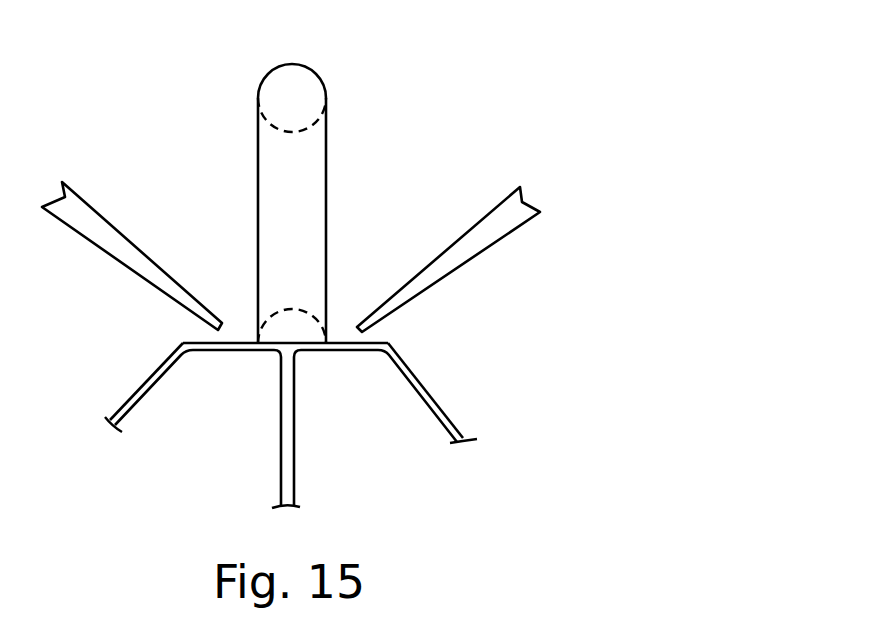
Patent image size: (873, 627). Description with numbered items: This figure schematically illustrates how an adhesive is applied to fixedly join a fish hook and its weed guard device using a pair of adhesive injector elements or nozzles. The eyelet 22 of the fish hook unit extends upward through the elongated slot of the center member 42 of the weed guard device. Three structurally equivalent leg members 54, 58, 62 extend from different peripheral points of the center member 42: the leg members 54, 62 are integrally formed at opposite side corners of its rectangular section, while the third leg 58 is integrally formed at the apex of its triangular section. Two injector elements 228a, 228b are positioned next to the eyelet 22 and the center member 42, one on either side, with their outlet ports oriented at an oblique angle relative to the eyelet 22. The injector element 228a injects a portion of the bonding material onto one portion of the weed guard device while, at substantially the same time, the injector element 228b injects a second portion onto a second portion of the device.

The eyelet 22 is at (315, 73).
The injector element 228a is at (120, 236).
The injector element 228b is at (452, 249).
The center member 42 is at (385, 341).
The leg member 54 is at (153, 376).
The leg member 58 is at (278, 434).
The leg member 62 is at (430, 388).